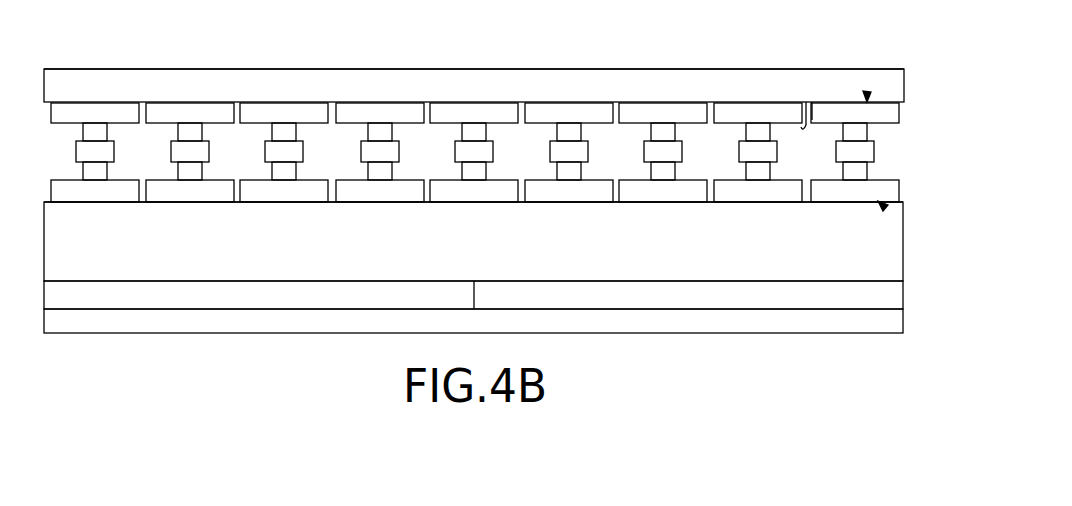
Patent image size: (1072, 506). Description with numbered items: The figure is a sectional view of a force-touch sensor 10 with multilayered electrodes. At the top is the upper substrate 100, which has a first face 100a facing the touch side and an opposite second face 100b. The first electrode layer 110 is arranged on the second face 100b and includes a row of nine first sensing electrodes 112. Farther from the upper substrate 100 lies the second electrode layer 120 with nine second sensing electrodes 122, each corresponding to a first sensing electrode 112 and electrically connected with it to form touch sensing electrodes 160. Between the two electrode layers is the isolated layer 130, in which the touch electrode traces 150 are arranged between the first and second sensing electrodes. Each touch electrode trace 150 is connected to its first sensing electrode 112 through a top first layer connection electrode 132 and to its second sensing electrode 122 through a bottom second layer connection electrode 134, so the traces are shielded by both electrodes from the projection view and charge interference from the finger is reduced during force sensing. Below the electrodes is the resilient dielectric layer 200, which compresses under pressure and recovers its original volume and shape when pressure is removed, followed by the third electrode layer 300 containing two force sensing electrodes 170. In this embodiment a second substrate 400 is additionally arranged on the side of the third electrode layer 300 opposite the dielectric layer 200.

The force-touch sensor 10 is at (211, 34).
The upper substrate 100 is at (900, 88).
The first face 100a is at (888, 68).
The second face 100b is at (801, 127).
The first electrode layer 110 is at (868, 96).
The first sensing electrodes 112 is at (450, 108).
The second sensing electrodes 122 is at (498, 190).
The first layer connection electrodes 132 is at (866, 128).
The second layer connection electrodes 134 is at (868, 170).
The touch electrode traces 150 is at (875, 147).
The touch sensing electrodes 160 is at (355, 190).
The isolated layer 130 is at (712, 155).
The second electrode layer 120 is at (884, 207).
The resilient dielectric layer 200 is at (900, 244).
The third electrode layer 300 is at (900, 292).
The second substrate 400 is at (900, 321).
The force sensing electrodes 170 is at (293, 297).